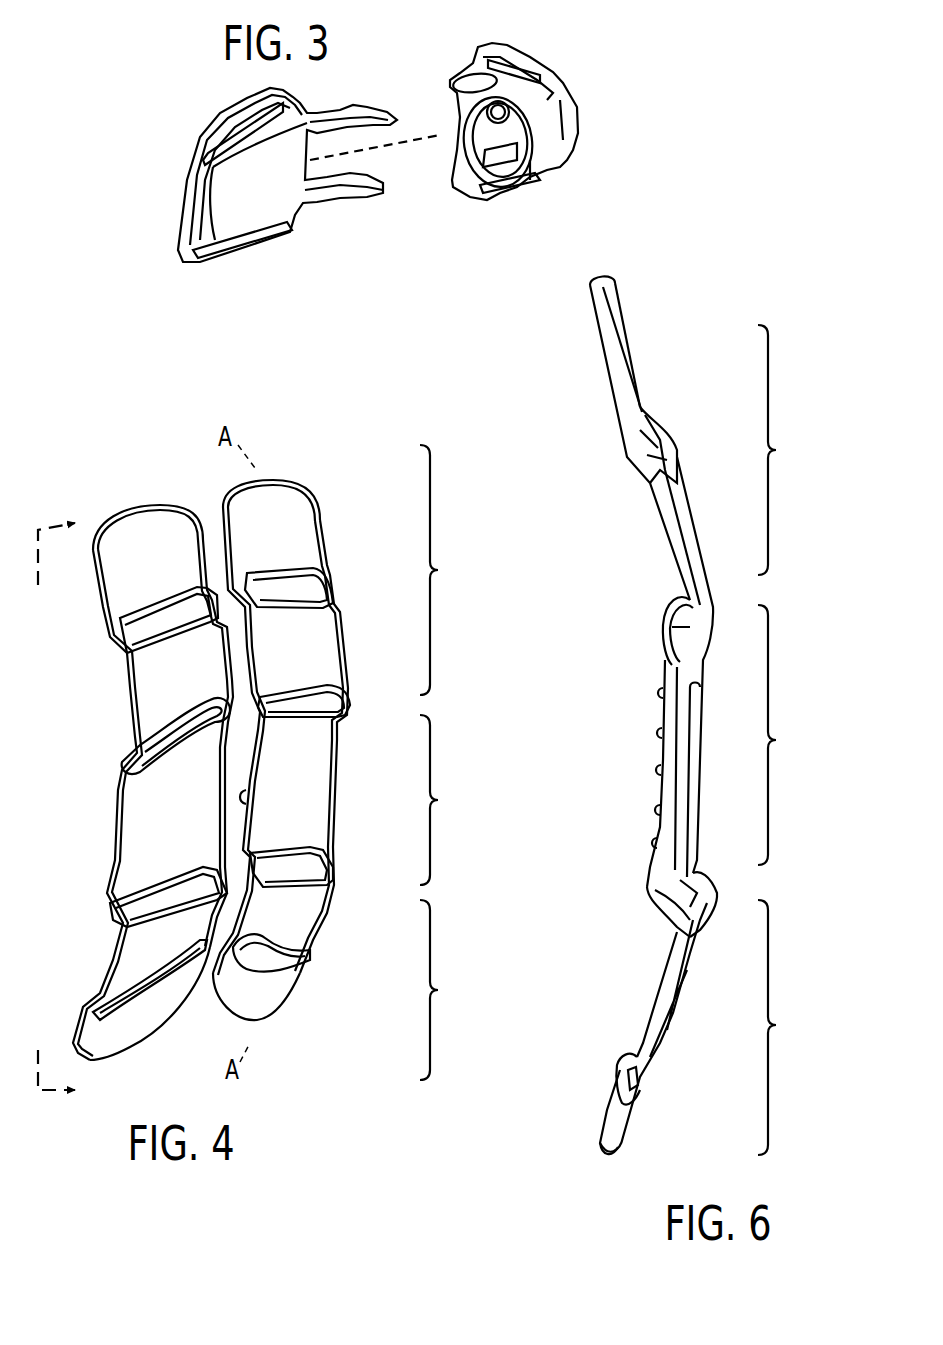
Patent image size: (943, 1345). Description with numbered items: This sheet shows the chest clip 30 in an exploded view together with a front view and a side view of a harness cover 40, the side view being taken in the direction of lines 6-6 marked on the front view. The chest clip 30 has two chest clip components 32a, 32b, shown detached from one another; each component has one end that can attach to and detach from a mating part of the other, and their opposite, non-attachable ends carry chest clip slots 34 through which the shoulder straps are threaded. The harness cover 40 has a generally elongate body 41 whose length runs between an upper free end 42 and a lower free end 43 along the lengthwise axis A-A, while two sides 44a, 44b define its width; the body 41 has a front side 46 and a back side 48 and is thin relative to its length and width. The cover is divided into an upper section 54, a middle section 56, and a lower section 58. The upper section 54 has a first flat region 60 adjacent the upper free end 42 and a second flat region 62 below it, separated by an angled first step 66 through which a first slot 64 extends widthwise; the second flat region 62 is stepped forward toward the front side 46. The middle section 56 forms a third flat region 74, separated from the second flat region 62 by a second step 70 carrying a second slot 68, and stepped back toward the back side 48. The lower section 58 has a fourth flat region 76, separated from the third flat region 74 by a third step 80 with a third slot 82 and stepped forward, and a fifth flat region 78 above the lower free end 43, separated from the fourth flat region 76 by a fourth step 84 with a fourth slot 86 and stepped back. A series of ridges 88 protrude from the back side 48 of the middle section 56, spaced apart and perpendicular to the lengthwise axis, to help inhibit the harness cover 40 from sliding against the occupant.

In FIG. 3, the chest clip 30 is at (168, 107).
In FIG. 3, the chest clip component 32a is at (285, 195).
In FIG. 3, the chest clip component 32b is at (563, 135).
In FIG. 3, the chest clip slots 34 is at (220, 147).
In FIG. 4, the harness cover 40 is at (331, 750).
In FIG. 6, the harness cover 40 is at (665, 721).
In FIG. 4, the body 41 is at (144, 782).
In FIG. 6, the body 41 is at (713, 775).
In FIG. 4, the upper free end 42 is at (240, 488).
In FIG. 6, the upper free end 42 is at (605, 280).
In FIG. 4, the lower free end 43 is at (262, 1020).
In FIG. 6, the lower free end 43 is at (605, 1160).
In FIG. 4, the side 44a is at (246, 797).
In FIG. 6, the side 44a is at (672, 750).
In FIG. 4, the side 44b is at (335, 785).
In FIG. 4, the front side 46 is at (150, 838).
In FIG. 6, the front side 46 is at (690, 745).
In FIG. 6, the back side 48 is at (660, 713).
In FIG. 4, the upper section 54 is at (362, 570).
In FIG. 6, the upper section 54 is at (704, 433).
In FIG. 4, the middle section 56 is at (356, 788).
In FIG. 6, the middle section 56 is at (687, 730).
In FIG. 4, the lower section 58 is at (328, 989).
In FIG. 6, the lower section 58 is at (691, 1013).
In FIG. 4, the first flat region 60 is at (305, 527).
In FIG. 6, the first flat region 60 is at (623, 350).
In FIG. 4, the second flat region 62 is at (325, 657).
In FIG. 6, the second flat region 62 is at (695, 540).
In FIG. 4, the first slot 64 is at (305, 590).
In FIG. 6, the first slot 64 is at (647, 447).
In FIG. 4, the first step 66 is at (337, 603).
In FIG. 6, the first step 66 is at (647, 470).
In FIG. 4, the second slot 68 is at (325, 703).
In FIG. 6, the second slot 68 is at (688, 625).
In FIG. 4, the second step 70 is at (340, 720).
In FIG. 6, the second step 70 is at (703, 650).
In FIG. 4, the third flat region 74 is at (280, 764).
In FIG. 6, the third flat region 74 is at (688, 823).
In FIG. 4, the fourth flat region 76 is at (312, 927).
In FIG. 6, the fourth flat region 76 is at (693, 967).
In FIG. 4, the fifth flat region 78 is at (278, 997).
In FIG. 6, the fifth flat region 78 is at (625, 1117).
In FIG. 4, the third step 80 is at (327, 883).
In FIG. 6, the third step 80 is at (667, 908).
In FIG. 4, the third slot 82 is at (307, 870).
In FIG. 6, the third slot 82 is at (668, 877).
In FIG. 4, the fourth step 84 is at (300, 960).
In FIG. 6, the fourth step 84 is at (633, 1058).
In FIG. 4, the fourth slot 86 is at (232, 965).
In FIG. 6, the fourth slot 86 is at (640, 1078).
In FIG. 6, the ridges 88 is at (652, 845).
In FIG. 4, the section line 6- 6 is at (70, 794).